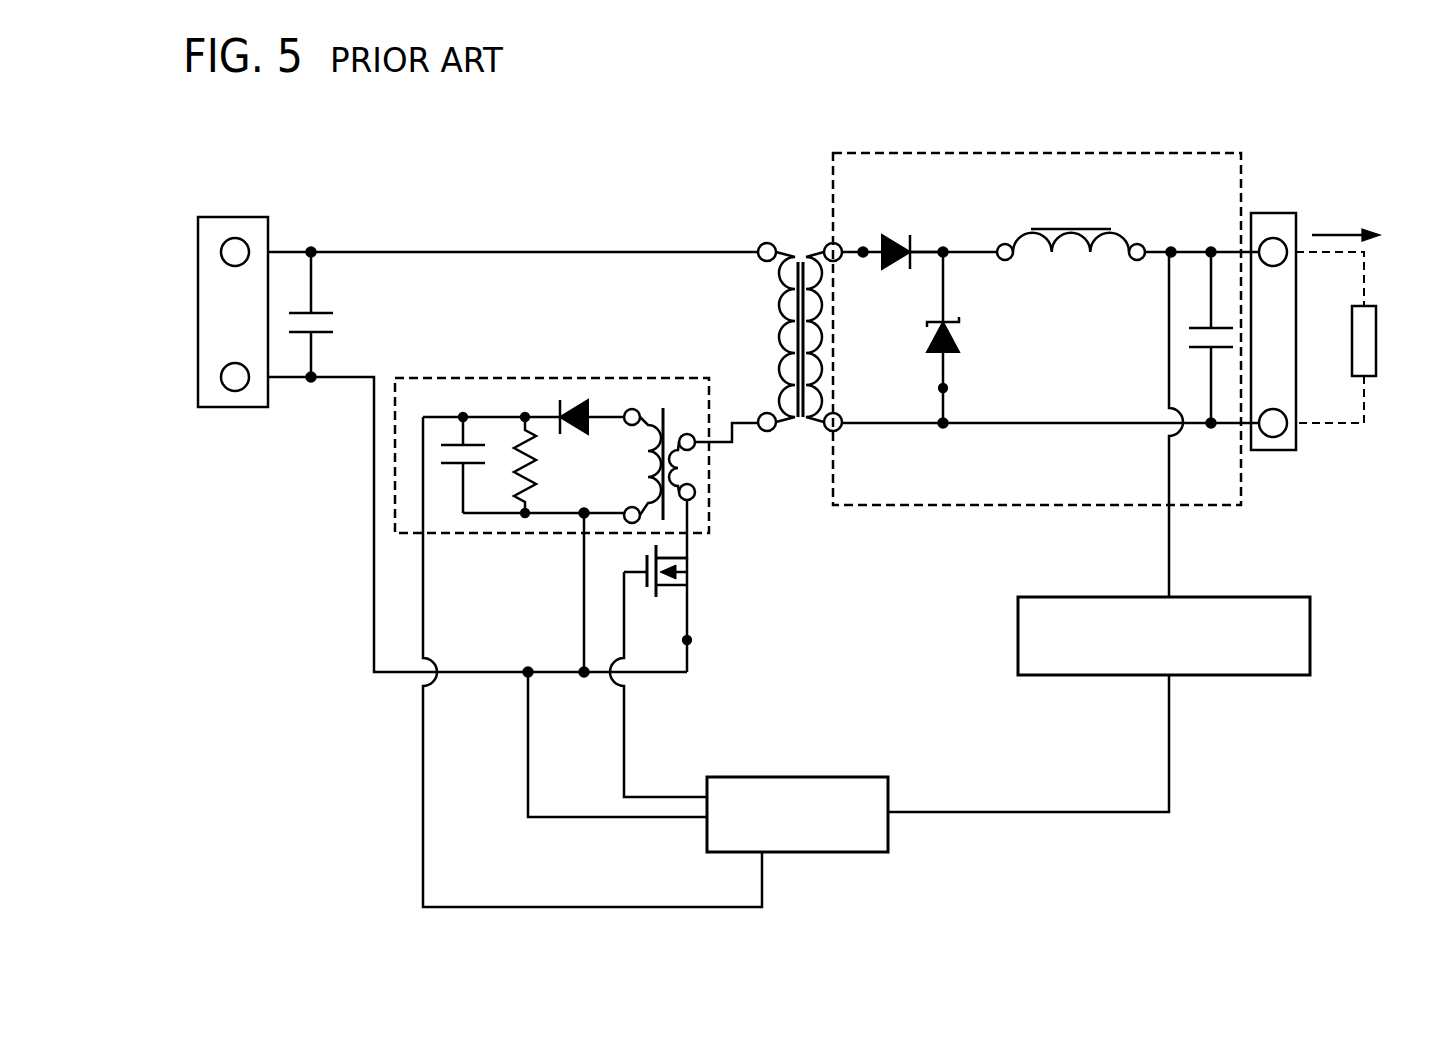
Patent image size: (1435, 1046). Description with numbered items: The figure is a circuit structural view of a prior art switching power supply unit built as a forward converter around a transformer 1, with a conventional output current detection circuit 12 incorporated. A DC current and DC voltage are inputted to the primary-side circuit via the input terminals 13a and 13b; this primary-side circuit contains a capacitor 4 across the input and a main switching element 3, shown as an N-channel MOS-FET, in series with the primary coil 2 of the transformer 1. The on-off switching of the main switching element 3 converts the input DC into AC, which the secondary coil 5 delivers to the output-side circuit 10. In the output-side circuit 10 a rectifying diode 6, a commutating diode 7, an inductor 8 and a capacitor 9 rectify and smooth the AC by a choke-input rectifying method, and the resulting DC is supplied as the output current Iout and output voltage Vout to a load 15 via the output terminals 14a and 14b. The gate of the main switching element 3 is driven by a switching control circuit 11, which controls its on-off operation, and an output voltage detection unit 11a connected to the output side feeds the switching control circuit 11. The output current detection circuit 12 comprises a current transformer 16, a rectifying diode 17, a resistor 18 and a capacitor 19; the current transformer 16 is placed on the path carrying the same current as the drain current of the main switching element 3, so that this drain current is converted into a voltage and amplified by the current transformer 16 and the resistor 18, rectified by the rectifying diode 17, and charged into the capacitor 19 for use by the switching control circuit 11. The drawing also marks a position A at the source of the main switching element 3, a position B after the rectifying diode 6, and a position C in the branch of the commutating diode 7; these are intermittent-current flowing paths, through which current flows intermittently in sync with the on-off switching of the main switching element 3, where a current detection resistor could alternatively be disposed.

The transformer 1 is at (808, 255).
The primary coil 2 is at (780, 287).
The main switching element 3 is at (692, 566).
The capacitor 4 is at (335, 322).
The secondary coil 5 is at (812, 430).
The rectifying diode 6 is at (891, 235).
The commutating diode 7 is at (962, 325).
The inductor 8 is at (1068, 229).
The capacitor 9 is at (1205, 328).
The output-side circuit 10 is at (1133, 153).
The switching control circuit 11 is at (852, 777).
The output voltage detection unit 11a is at (1312, 640).
The output current detection circuit 12 is at (709, 522).
The input terminal 13a is at (238, 250).
The input terminal 13b is at (236, 382).
The output terminal 14a is at (1276, 238).
The output terminal 14b is at (1270, 440).
The load 15 is at (1378, 355).
The current transformer 16 is at (663, 408).
The rectifying diode 17 is at (583, 400).
The resistor 18 is at (533, 430).
The capacitor 19 is at (452, 435).
The position A is at (690, 640).
The position B is at (863, 255).
The position C is at (948, 388).